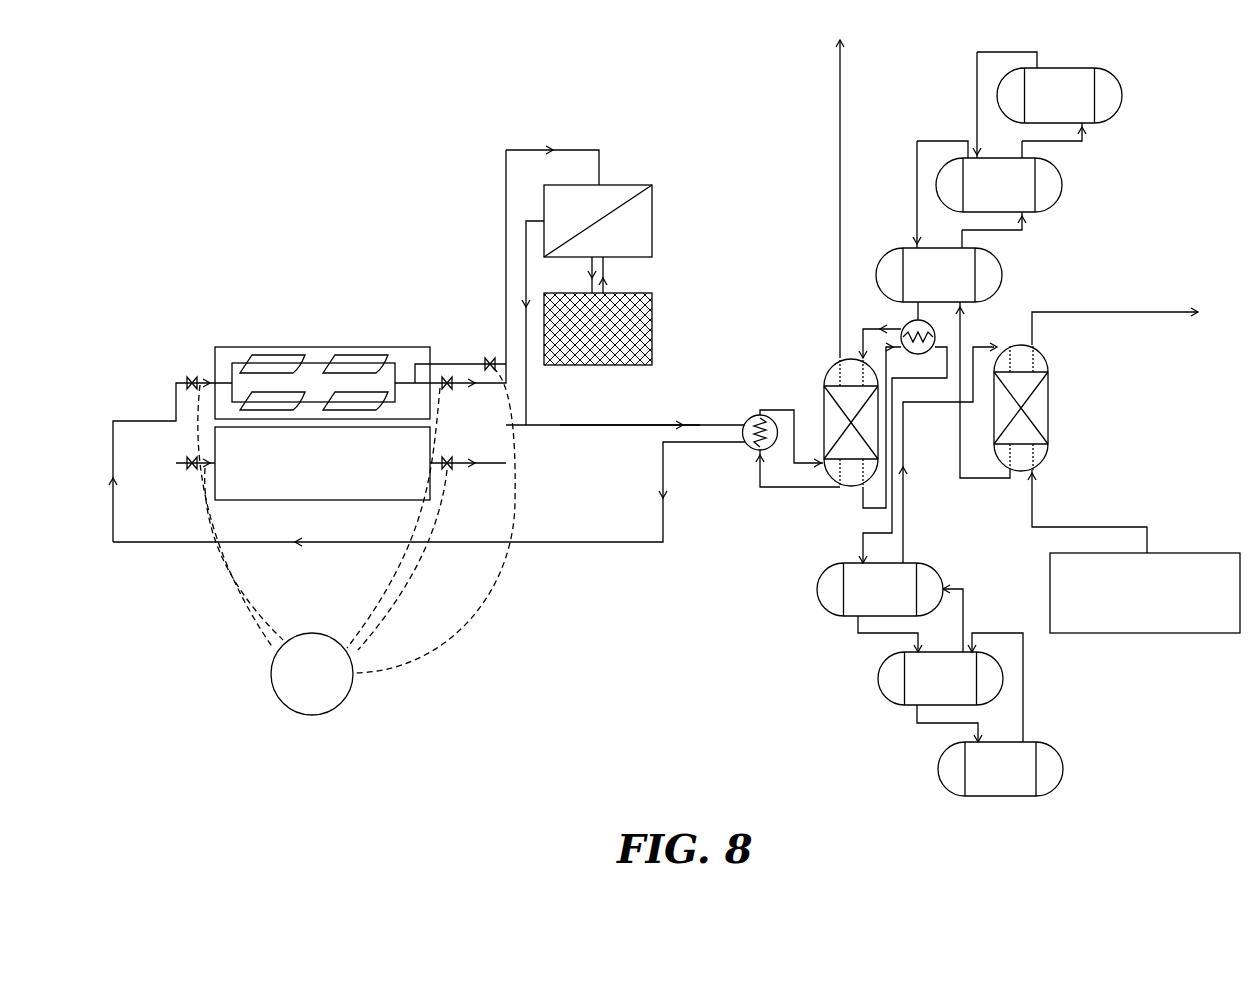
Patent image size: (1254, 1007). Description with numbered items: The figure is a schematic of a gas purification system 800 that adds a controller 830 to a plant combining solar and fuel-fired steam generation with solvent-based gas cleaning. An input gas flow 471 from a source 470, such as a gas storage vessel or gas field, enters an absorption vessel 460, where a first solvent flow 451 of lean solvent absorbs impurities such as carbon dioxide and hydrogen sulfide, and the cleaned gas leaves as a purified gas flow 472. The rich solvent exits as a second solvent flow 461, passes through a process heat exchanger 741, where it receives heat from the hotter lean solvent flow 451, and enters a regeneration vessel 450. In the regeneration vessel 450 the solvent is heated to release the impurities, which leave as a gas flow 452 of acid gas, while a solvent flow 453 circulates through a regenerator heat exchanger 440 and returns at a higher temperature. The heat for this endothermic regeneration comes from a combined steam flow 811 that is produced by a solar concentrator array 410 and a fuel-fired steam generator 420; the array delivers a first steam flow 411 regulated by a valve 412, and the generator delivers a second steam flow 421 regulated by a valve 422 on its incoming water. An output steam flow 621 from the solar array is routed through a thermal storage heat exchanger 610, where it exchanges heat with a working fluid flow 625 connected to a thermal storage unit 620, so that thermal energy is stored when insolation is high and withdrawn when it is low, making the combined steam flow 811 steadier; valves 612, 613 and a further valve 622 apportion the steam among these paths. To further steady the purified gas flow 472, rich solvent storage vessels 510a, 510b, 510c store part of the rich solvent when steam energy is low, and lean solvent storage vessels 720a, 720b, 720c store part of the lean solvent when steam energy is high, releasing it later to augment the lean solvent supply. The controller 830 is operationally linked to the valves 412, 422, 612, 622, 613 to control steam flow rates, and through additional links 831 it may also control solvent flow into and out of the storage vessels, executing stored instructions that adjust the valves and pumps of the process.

The gas purification system 800 is at (234, 144).
The solar concentrator array 410 is at (360, 347).
The fuel-fired steam generator 420 is at (342, 500).
The first steam flow 411 is at (175, 405).
The valve 412 is at (192, 378).
The second steam flow 421 is at (176, 435).
The valve 422 is at (193, 470).
The valve 612 is at (445, 377).
The valve 622 is at (455, 470).
The valve 613 is at (490, 352).
The output steam flow 621 is at (506, 190).
The thermal storage heat exchanger 610 is at (653, 205).
The working fluid flow 625 is at (607, 263).
The thermal storage unit 620 is at (653, 310).
The combined steam flow 811 is at (582, 425).
The regenerator heat exchanger 440 is at (737, 463).
The regeneration vessel 450 is at (800, 392).
The first solvent flow 451 is at (873, 513).
The gas flow 452 is at (840, 172).
The solvent flow 453 is at (903, 523).
The process heat exchanger 741 is at (893, 312).
The second solvent flow 461 is at (958, 428).
The absorption vessel 460 is at (1076, 414).
The input gas flow 471 is at (1032, 502).
The purified gas flow 472 is at (1112, 313).
The source 470 is at (1175, 633).
The rich solvent storage vessel 510a is at (1021, 272).
The rich solvent storage vessel 510b is at (1083, 181).
The rich solvent storage vessel 510c is at (1139, 94).
The lean solvent storage vessel 720a is at (799, 591).
The lean solvent storage vessel 720b is at (851, 683).
The lean solvent storage vessel 720c is at (916, 771).
The controller 830 is at (287, 707).
The additional links 831 is at (368, 610).